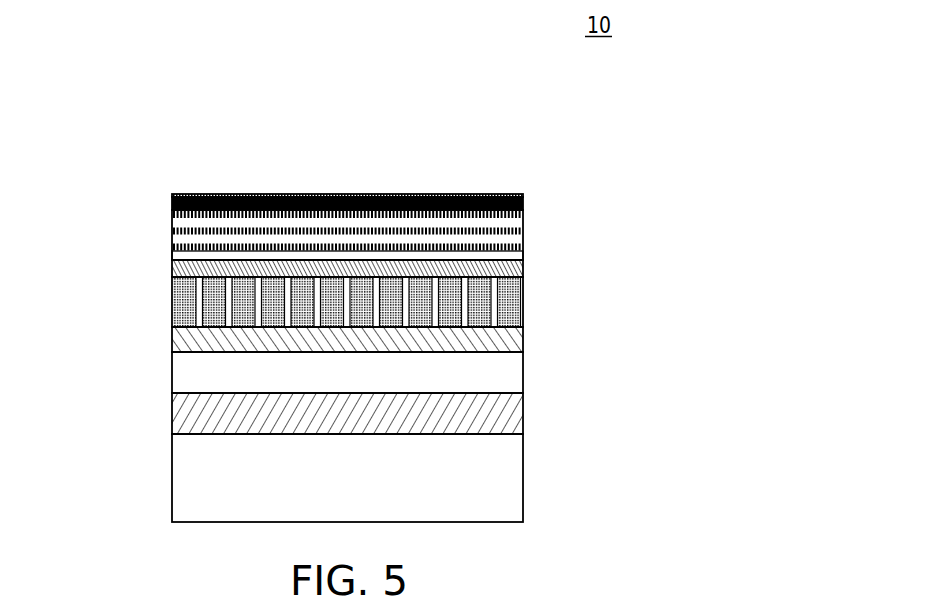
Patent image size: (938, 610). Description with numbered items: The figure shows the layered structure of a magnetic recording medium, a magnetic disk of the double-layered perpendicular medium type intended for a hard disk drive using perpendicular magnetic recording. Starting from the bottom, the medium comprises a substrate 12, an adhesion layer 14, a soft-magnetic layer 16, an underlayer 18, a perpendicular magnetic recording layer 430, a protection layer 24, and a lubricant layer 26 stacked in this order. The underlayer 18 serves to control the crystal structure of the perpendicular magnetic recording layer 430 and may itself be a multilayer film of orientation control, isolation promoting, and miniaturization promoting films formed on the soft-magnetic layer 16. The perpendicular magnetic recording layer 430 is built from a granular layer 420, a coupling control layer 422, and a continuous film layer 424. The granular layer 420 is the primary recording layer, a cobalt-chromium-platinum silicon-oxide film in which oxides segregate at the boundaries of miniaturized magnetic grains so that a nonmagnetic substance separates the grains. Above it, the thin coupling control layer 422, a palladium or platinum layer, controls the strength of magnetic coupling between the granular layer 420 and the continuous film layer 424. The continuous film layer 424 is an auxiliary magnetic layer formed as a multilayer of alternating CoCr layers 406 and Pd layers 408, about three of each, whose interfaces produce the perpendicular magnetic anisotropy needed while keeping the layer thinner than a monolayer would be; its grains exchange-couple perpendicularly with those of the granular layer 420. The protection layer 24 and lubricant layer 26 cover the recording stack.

The substrate 12 is at (523, 477).
The adhesion layer 14 is at (523, 408).
The soft-magnetic layer 16 is at (515, 370).
The underlayer 18 is at (521, 335).
The protection layer 24 is at (523, 201).
The lubricant layer 26 is at (523, 196).
The CoCr layer 406 is at (523, 257).
The Pd layer 408 is at (523, 247).
The granular layer 420 is at (172, 302).
The coupling control layer 422 is at (172, 268).
The continuous film layer 424 is at (152, 210).
The perpendicular magnetic recording layer 430 is at (100, 215).